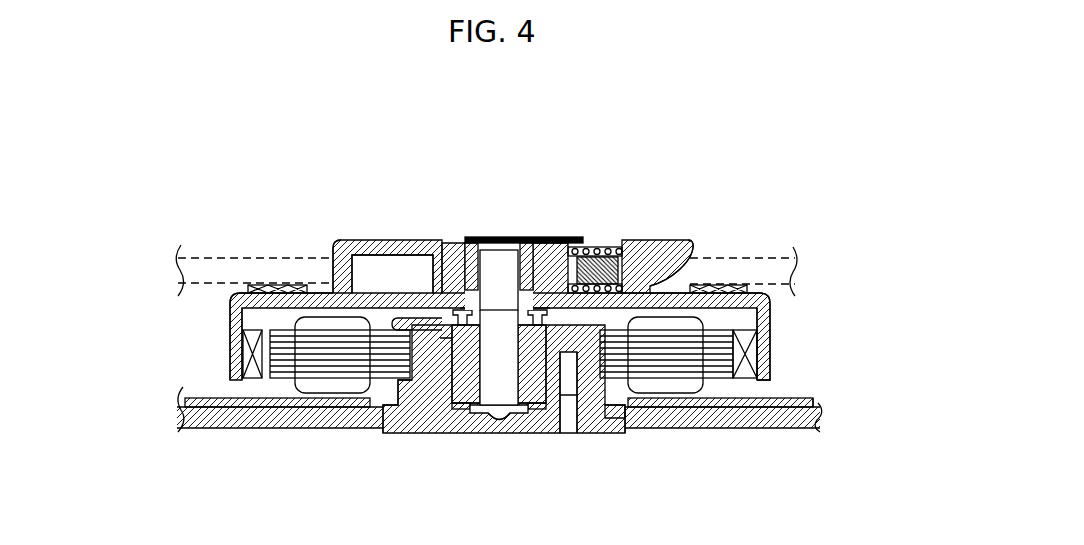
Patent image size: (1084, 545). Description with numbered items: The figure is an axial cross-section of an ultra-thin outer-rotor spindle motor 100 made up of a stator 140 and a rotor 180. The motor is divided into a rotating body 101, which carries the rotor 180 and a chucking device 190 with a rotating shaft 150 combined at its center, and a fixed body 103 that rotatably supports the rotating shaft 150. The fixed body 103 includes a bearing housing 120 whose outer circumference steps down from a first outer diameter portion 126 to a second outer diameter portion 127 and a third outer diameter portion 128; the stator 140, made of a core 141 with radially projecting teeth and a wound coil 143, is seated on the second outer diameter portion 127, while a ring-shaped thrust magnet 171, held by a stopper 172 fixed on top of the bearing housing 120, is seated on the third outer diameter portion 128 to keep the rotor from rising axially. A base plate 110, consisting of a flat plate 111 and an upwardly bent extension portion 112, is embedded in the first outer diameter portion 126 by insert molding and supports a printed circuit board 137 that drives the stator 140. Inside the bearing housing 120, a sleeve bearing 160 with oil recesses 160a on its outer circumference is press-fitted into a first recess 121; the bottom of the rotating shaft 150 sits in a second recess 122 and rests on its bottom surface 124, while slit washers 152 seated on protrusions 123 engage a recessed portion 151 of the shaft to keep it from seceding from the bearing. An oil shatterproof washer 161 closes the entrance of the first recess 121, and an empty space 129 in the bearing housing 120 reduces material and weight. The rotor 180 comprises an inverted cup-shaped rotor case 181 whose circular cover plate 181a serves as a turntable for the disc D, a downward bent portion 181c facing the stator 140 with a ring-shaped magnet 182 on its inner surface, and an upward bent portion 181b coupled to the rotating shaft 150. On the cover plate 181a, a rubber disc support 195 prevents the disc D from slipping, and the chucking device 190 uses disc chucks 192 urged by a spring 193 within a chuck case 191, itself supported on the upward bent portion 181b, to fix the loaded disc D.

The spindle motor 100 is at (135, 314).
The rotating body 101 is at (226, 333).
The fixed body 103 is at (280, 388).
The base plate 110 is at (747, 503).
The flat plate 111 is at (727, 422).
The extension portion 112 is at (628, 412).
The bearing housing 120 is at (400, 443).
The first recess 121 is at (437, 376).
The second recess 122 is at (455, 401).
The protrusions 123 is at (425, 433).
The bottom surface 124 is at (466, 412).
The first outer diameter portion 126 is at (605, 420).
The second outer diameter portion 127 is at (645, 275).
The third outer diameter portion 128 is at (598, 250).
The empty space 129 is at (565, 434).
The printed circuit board 137 is at (790, 405).
The stator 140 is at (857, 348).
The core 141 is at (722, 357).
The coil 143 is at (694, 384).
The rotating shaft 150 is at (492, 260).
The recessed portion 151 is at (500, 428).
The slit washers 152 is at (528, 416).
The sleeve bearing 160 is at (467, 352).
The recesses 160a is at (445, 340).
The oil shatterproof washer 161 is at (470, 309).
The thrust magnet 171 is at (372, 296).
The stopper 172 is at (437, 254).
The rotor 180 is at (857, 283).
The rotor case 181 is at (767, 302).
The circular cover plate 181a is at (345, 292).
The upward bent portion 181b is at (538, 296).
The downward bent portion 181c is at (762, 345).
The magnet 182 is at (765, 322).
The chucking device 190 is at (706, 228).
The chuck case 191 is at (570, 247).
The disc chucks 192 is at (684, 243).
The spring 193 is at (612, 262).
The disc support 195 is at (730, 285).
The disc D is at (233, 257).